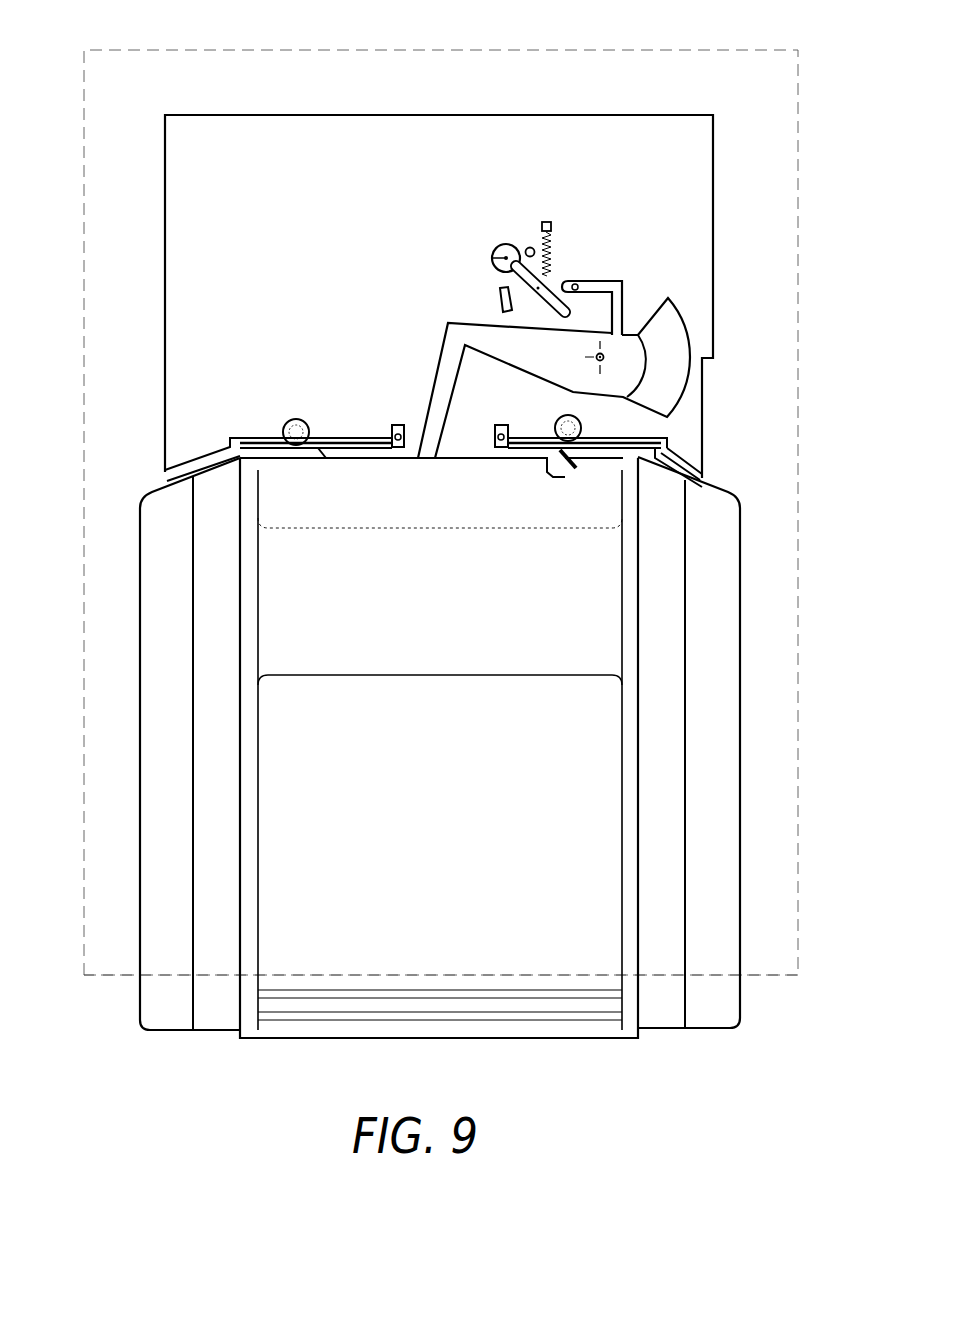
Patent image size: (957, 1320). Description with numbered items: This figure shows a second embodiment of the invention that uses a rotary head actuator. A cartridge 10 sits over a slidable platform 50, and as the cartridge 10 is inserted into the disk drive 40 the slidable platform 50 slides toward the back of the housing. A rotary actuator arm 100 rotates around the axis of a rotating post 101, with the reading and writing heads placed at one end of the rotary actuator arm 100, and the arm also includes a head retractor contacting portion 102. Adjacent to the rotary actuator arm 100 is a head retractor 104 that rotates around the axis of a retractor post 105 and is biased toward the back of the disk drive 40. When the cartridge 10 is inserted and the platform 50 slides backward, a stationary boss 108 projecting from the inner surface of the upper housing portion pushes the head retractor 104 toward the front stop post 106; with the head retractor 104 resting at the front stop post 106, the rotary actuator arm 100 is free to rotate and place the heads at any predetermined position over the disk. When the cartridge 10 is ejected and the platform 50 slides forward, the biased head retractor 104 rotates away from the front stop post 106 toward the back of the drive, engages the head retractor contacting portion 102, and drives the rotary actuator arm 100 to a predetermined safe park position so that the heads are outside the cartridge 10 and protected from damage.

The cartridge 10 is at (714, 1048).
The disk drive 40 is at (106, 973).
The slidable platform 50 is at (282, 98).
The rotary actuator arm 100 is at (432, 385).
The rotating post 101 is at (604, 358).
The head retractor contacting portion 102 is at (607, 285).
The head retractor 104 is at (526, 248).
The retractor post 105 is at (492, 258).
The front stop post 106 is at (500, 298).
The stationary boss 108 is at (527, 247).